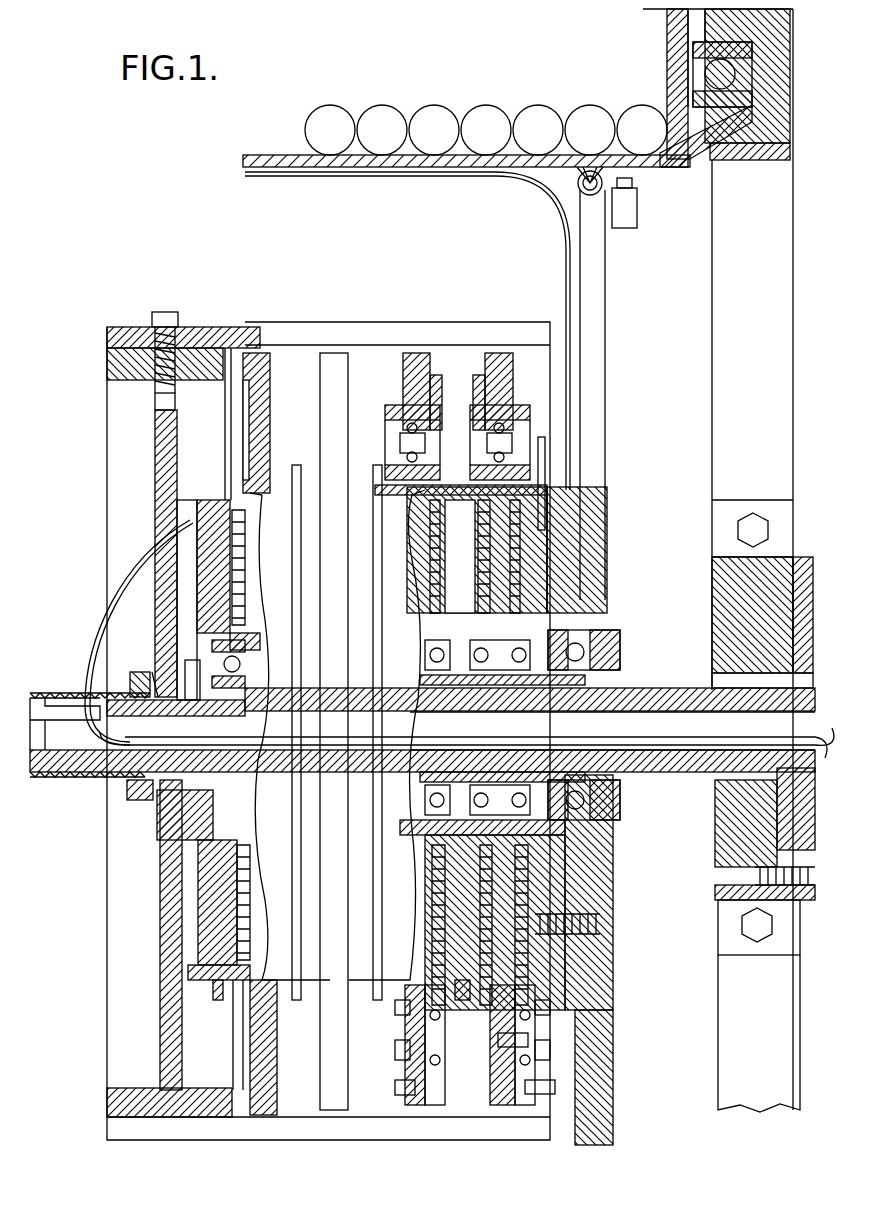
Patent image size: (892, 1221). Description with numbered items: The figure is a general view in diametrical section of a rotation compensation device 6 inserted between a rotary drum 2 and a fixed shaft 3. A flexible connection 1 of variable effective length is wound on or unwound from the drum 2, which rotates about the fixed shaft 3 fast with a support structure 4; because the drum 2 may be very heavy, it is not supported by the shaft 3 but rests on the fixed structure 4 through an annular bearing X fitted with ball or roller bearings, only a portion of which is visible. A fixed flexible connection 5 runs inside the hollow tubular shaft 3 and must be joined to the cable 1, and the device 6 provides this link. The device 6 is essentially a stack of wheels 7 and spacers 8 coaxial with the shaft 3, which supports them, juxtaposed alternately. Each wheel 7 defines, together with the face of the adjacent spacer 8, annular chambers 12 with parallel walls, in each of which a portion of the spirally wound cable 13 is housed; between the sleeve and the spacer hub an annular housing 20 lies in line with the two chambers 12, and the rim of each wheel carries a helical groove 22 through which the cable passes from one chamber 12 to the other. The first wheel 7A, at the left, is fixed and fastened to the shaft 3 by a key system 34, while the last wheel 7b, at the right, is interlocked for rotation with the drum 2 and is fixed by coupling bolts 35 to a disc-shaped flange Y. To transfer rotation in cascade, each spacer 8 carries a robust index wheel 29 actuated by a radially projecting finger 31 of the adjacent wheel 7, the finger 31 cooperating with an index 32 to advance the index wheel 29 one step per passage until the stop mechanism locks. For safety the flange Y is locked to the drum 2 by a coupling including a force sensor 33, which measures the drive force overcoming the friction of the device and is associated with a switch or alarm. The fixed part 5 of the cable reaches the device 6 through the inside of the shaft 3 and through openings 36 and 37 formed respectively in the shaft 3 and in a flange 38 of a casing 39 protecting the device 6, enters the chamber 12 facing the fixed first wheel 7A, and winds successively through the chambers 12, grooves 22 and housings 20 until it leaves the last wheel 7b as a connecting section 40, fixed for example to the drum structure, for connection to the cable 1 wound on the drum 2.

The flexible connection 1 is at (325, 128).
The rotary drum 2 is at (672, 150).
The fixed shaft 3 is at (674, 681).
The support structure 4 is at (737, 462).
The fixed flexible connection 5 is at (685, 742).
The rotation compensation device 6 is at (365, 322).
The wheel 7 is at (410, 520).
The first wheel 7A is at (204, 582).
The last wheel 7b is at (557, 554).
The spacer 8 is at (330, 363).
The annular chamber 12 is at (490, 592).
The spirally wound cable section 13 is at (118, 607).
The annular housing 20 is at (535, 840).
The helical groove 22 is at (470, 975).
The index wheel 29 is at (525, 1105).
The radially projecting finger 31 is at (508, 1040).
The index 32 is at (560, 1088).
The force sensor 33 is at (624, 204).
The key system 34 is at (190, 670).
The coupling bolt 35 is at (605, 925).
The opening 36 is at (72, 710).
The opening 37 is at (160, 556).
The flange 38 is at (160, 462).
The casing 39 is at (115, 345).
The connecting section 40 is at (568, 260).
The annular bearing X is at (752, 50).
The disc-shaped flange Y is at (595, 355).